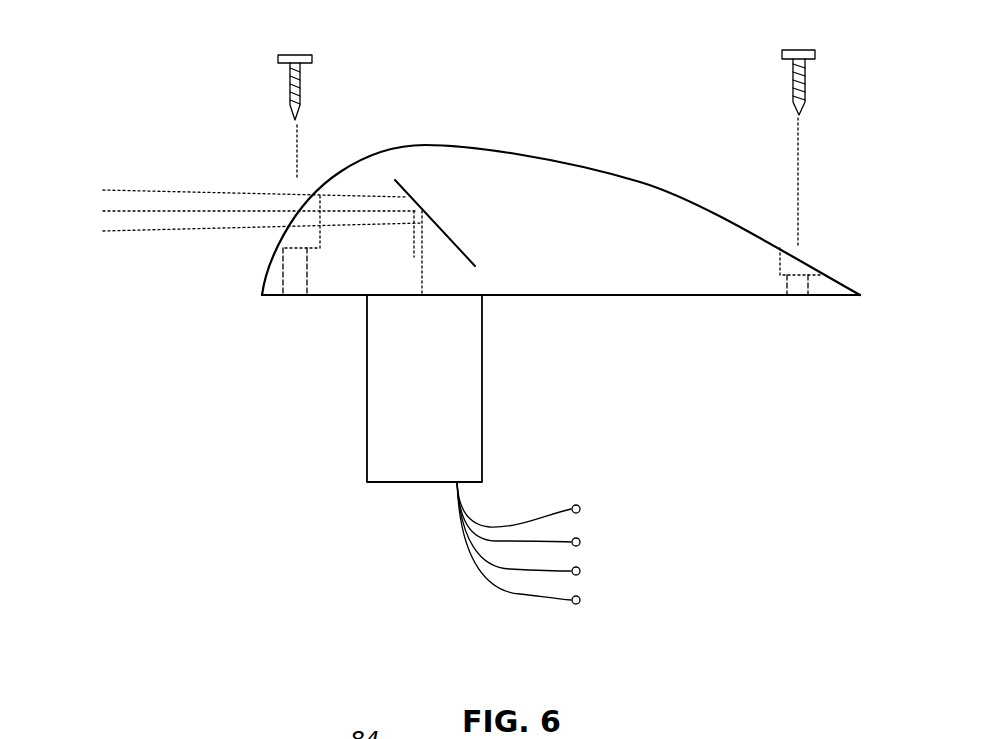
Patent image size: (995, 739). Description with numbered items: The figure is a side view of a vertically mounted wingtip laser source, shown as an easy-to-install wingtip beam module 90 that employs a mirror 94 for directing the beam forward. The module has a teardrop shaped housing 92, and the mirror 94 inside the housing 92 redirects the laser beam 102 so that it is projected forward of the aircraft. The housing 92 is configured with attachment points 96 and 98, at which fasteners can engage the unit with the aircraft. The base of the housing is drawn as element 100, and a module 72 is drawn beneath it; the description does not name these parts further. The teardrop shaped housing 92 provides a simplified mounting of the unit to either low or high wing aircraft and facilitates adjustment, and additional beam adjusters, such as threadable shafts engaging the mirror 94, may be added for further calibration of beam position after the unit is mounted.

The wingtip beam module 90 is at (141, 63).
The teardrop shaped housing 92 is at (640, 182).
The mirror 94 is at (427, 212).
The attachment point 96 is at (805, 260).
The attachment point 98 is at (283, 236).
The base plate 100 is at (607, 295).
The laser beam 102 is at (105, 178).
The electronics module 72 is at (366, 398).